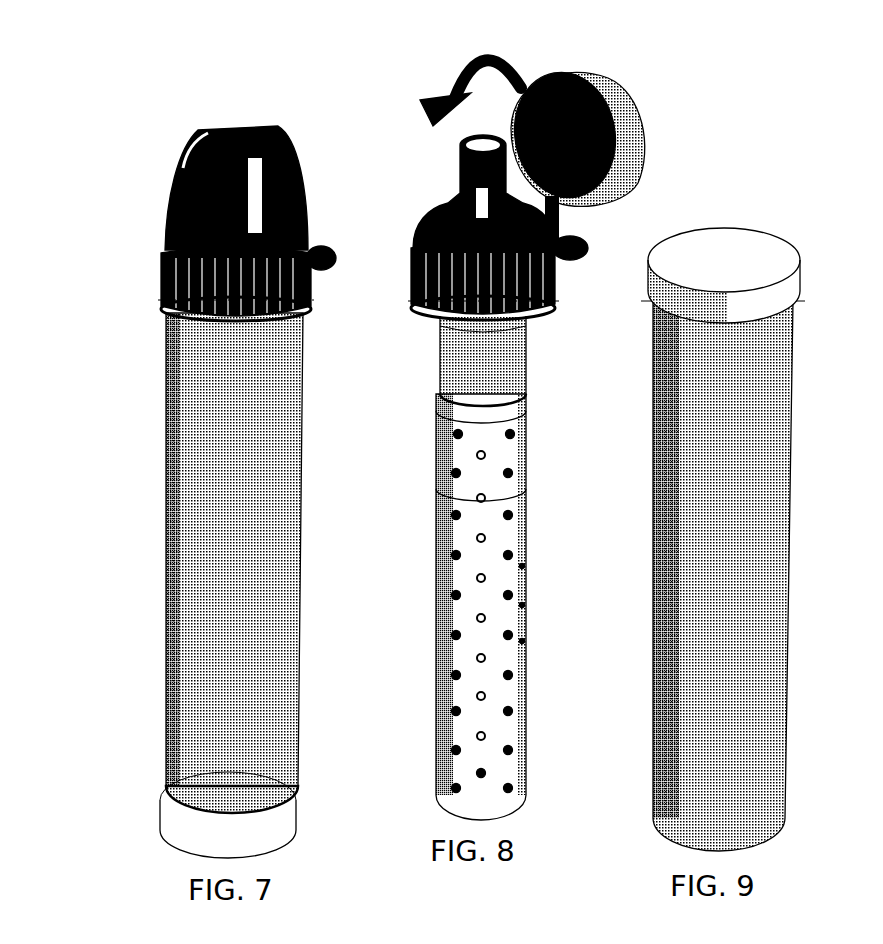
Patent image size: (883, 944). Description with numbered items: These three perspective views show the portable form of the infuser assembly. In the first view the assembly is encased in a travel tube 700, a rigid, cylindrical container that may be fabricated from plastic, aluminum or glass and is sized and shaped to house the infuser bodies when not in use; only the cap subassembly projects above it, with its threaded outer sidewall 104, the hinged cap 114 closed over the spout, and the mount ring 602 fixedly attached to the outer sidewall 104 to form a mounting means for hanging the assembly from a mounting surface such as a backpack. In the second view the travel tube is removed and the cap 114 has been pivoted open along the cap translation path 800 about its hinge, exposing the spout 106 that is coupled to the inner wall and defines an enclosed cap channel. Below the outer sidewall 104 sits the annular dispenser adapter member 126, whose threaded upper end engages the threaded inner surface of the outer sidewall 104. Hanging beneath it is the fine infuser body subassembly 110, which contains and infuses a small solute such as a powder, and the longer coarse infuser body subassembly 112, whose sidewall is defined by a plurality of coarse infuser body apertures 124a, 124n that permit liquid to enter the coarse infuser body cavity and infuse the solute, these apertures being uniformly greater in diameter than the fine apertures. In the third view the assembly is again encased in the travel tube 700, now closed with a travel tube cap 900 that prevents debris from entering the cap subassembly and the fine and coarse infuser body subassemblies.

In FIG. 7, the outer sidewall 104 is at (157, 243).
In FIG. 8, the outer sidewall 104 is at (407, 222).
In FIG. 8, the spout 106 is at (447, 167).
In FIG. 8, the fine infuser body subassembly 110 is at (437, 343).
In FIG. 8, the coarse infuser body subassembly 112 is at (484, 607).
In FIG. 7, the cap 114 is at (177, 158).
In FIG. 8, the cap 114 is at (615, 118).
In FIG. 8, the coarse infuser body aperture 124a is at (508, 428).
In FIG. 8, the coarse infuser body aperture 124n is at (506, 780).
In FIG. 8, the dispenser adapter member 126 is at (523, 306).
In FIG. 7, the mount ring 602 is at (328, 252).
In FIG. 8, the mount ring 602 is at (578, 242).
In FIG. 7, the travel tube 700 is at (158, 537).
In FIG. 9, the travel tube 700 is at (780, 485).
In FIG. 8, the cap translation path 800 is at (443, 62).
In FIG. 9, the travel tube cap 900 is at (772, 243).